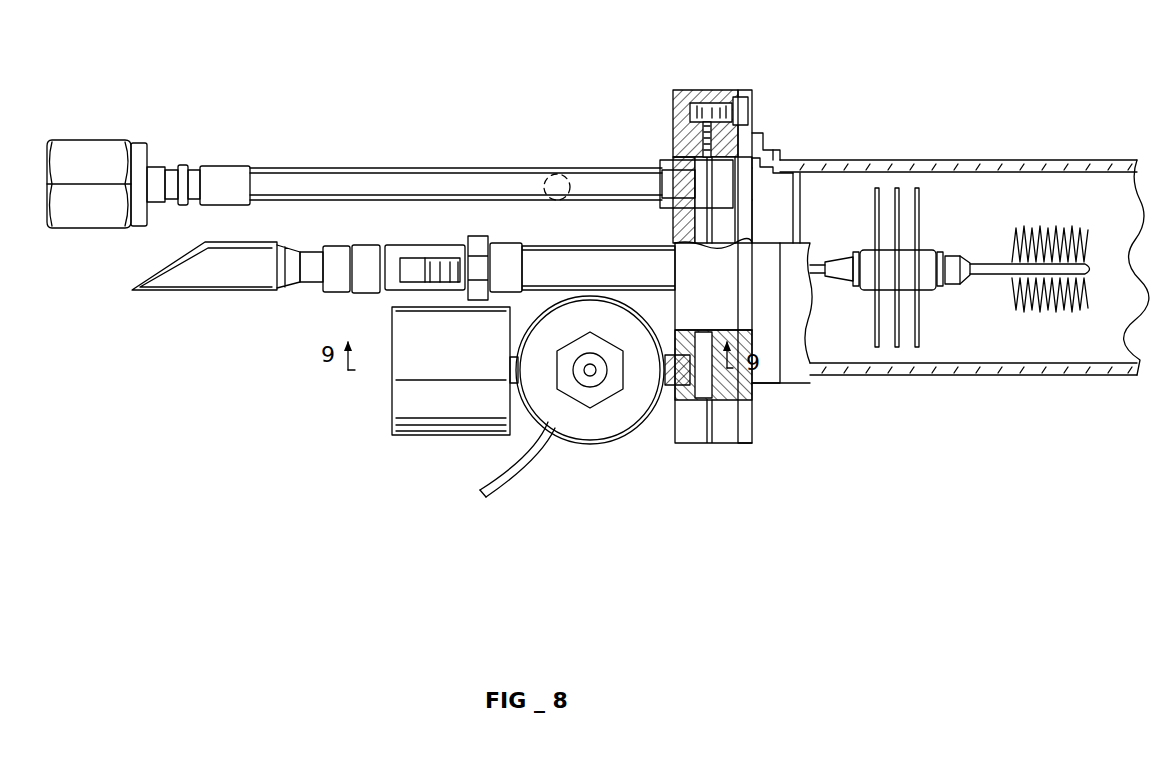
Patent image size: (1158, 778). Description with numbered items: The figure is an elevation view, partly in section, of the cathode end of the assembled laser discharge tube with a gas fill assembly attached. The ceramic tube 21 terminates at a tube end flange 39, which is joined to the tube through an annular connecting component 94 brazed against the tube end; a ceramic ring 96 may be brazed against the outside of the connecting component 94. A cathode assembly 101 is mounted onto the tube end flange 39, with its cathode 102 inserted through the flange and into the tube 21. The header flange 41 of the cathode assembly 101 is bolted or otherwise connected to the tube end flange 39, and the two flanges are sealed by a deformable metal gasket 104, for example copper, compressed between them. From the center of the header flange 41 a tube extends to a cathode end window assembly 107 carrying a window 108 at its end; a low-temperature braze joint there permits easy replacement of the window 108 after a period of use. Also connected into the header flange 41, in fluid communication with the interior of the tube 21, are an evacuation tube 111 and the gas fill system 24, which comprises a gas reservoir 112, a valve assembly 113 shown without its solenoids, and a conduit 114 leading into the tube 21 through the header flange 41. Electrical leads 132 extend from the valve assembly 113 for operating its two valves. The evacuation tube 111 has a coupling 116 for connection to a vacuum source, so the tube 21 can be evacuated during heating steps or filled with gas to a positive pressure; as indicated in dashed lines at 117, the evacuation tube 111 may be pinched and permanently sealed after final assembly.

The tube 21 is at (955, 160).
The gas fill system 24 is at (474, 449).
The tube end flange 39 is at (741, 90).
The header flange 41 is at (688, 90).
The annular connecting component 94 is at (765, 148).
The ceramic ring 96 is at (785, 152).
The cathode assembly 101 is at (813, 388).
The cathode 102 is at (965, 290).
The deformable metal gasket 104 is at (706, 100).
The cathode end window assembly 107 is at (273, 303).
The window 108 is at (148, 278).
The evacuation tube 111 is at (397, 168).
The gas reservoir 112 is at (408, 407).
The valve assembly 113 is at (632, 437).
The conduit 114 is at (673, 325).
The coupling 116 is at (88, 140).
The pinch seal location 117 is at (565, 170).
The electrical leads 132 is at (528, 455).